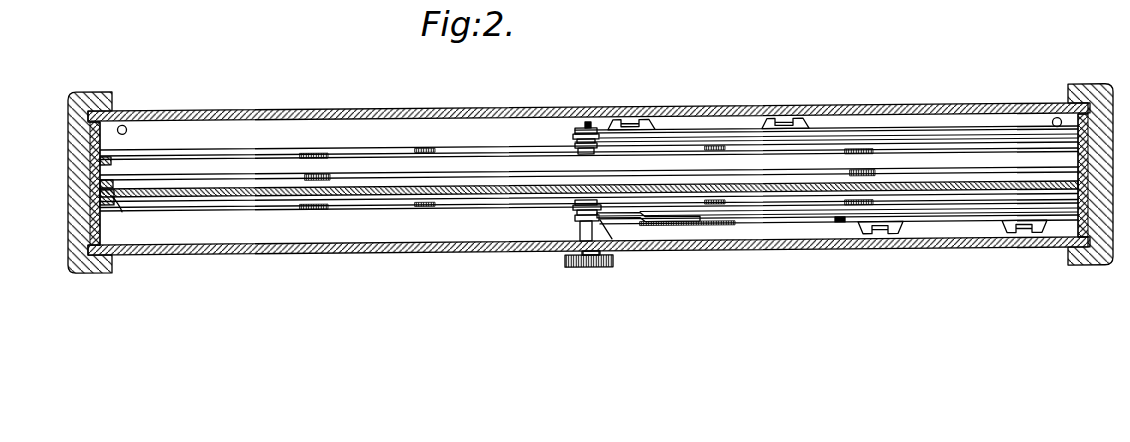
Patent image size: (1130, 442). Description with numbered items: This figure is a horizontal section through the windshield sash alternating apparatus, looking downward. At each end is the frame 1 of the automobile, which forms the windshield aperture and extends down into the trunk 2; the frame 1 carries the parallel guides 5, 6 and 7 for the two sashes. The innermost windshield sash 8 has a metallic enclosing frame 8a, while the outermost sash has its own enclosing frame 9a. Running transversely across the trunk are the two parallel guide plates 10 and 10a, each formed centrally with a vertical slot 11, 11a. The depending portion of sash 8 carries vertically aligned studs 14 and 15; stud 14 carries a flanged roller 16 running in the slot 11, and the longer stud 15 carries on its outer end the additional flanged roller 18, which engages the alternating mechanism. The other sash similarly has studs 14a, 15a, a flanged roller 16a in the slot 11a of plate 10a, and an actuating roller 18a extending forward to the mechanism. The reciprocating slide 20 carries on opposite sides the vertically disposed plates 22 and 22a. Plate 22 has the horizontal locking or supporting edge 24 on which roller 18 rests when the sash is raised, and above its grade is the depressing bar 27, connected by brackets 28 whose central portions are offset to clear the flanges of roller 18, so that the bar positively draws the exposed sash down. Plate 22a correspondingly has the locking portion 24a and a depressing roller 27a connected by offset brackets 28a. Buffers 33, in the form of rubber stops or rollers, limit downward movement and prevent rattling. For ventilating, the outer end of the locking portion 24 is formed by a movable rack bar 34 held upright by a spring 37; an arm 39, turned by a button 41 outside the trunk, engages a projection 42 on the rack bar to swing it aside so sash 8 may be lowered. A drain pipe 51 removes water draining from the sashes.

The frame 1 is at (577, 179).
The drain pipe 51 is at (590, 108).
The trunk 2 is at (589, 102).
The guide plate 10a is at (589, 118).
The enclosing frame of sash 9 9a is at (589, 127).
The guide plate 10 is at (589, 216).
The windshield sash 8 is at (589, 213).
The buffers 33 is at (587, 146).
The depressing roller 27a is at (826, 105).
The rear plate 22a is at (826, 111).
The horizontal locking portion 24a is at (839, 107).
The offset brackets 28a is at (721, 105).
The horizontal locking or supporting edge 24 is at (839, 247).
The plate 22 is at (839, 248).
The reciprocating slide 20 is at (859, 258).
The depressing grade bar 27 is at (839, 248).
The brackets 28 is at (952, 256).
The spring 37 is at (687, 249).
The flanged roller 16a is at (577, 113).
The flanged roller 18a is at (593, 104).
The stud 15a is at (614, 96).
The vertical slot 11a is at (603, 117).
The stud 14a is at (565, 140).
The vertical slot 11 is at (567, 216).
The stud 14 is at (575, 223).
The flanged roller 16 is at (638, 242).
The flanged roller 18 is at (563, 246).
The movable rack bar 34 is at (642, 258).
The projection 42 is at (608, 260).
The stud 15 is at (554, 273).
The arm 39 is at (590, 279).
The button 41 is at (578, 277).
The guide 5 is at (68, 170).
The guide 6 is at (69, 191).
The guide 7 is at (71, 205).
The enclosing frame of sash 8 8a is at (128, 213).